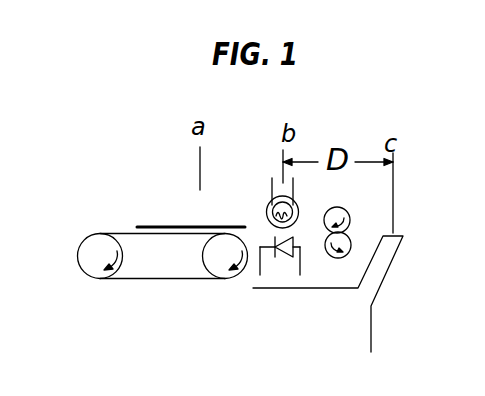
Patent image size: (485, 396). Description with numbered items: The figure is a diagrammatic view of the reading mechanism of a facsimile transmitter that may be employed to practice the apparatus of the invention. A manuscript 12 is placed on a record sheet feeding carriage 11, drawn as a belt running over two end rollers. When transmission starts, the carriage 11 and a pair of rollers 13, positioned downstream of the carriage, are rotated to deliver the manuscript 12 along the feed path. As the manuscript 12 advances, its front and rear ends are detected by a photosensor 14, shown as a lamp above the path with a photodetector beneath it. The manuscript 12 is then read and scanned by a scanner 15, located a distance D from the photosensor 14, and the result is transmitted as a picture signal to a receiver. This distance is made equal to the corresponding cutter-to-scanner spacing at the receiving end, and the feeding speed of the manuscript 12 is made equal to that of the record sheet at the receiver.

The record sheet feeding carriage 11 is at (127, 238).
The manuscript 12 is at (175, 225).
The rollers 13 is at (347, 216).
The photosensor 14 is at (265, 243).
The scanner 15 is at (373, 320).